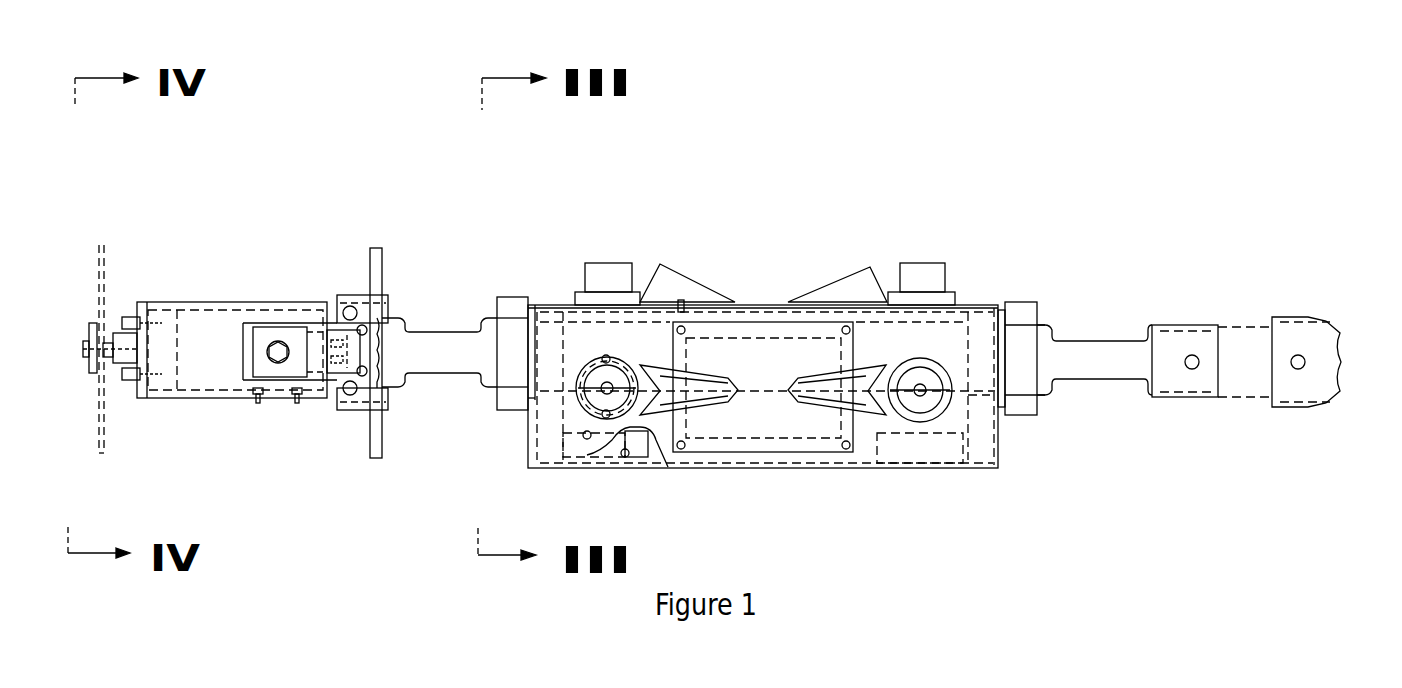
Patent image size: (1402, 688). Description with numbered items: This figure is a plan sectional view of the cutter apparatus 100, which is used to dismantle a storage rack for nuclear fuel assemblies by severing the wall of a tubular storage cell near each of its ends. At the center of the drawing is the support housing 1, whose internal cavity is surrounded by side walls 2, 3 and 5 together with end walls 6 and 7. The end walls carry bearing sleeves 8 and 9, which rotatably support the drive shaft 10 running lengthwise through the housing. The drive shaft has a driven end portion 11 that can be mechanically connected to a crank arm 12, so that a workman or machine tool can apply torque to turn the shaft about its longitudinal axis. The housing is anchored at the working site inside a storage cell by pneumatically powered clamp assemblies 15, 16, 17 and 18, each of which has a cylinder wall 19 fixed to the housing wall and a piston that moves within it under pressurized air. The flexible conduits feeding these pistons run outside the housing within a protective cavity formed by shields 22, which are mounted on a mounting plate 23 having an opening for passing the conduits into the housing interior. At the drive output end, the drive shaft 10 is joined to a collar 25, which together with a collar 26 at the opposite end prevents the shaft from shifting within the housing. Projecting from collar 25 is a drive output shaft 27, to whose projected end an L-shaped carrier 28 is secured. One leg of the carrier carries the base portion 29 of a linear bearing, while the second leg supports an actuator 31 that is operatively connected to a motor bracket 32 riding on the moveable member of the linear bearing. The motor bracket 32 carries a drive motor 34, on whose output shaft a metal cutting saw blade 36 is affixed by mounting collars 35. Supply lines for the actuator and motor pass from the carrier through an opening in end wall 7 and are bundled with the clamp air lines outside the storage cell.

The support housing 1 is at (794, 416).
The side wall 2 is at (804, 244).
The side wall 3 is at (766, 503).
The side wall 5 is at (1038, 326).
The end wall 6 is at (1056, 402).
The end wall 7 is at (486, 449).
The bearing sleeve 8 is at (1030, 378).
The bearing sleeve 9 is at (500, 387).
The drive shaft 10 is at (764, 327).
The driven end portion 11 is at (1111, 333).
The crank arm 12 is at (1328, 333).
The pneumatically powered clamp assembly 15 is at (641, 447).
The pneumatically powered clamp assembly 16 is at (947, 464).
The pneumatically powered clamp assembly 17 is at (627, 227).
The pneumatically powered clamp assembly 18 is at (980, 210).
The cylinder wall 19 is at (596, 463).
The shields 22 is at (780, 346).
The mounting plate 23 is at (783, 282).
The collar 25 is at (1097, 393).
The collar 26 is at (491, 304).
The drive output shaft 27 is at (439, 312).
The L-shaped carrier 28 is at (436, 303).
The base portion 29 is at (329, 271).
The actuator 31 is at (310, 419).
The motor bracket 32 is at (224, 386).
The drive motor 34 is at (272, 283).
The mounting collars 35 is at (129, 377).
The metal cutting saw blade 36 is at (136, 318).
The cutter apparatus 100 is at (1217, 385).